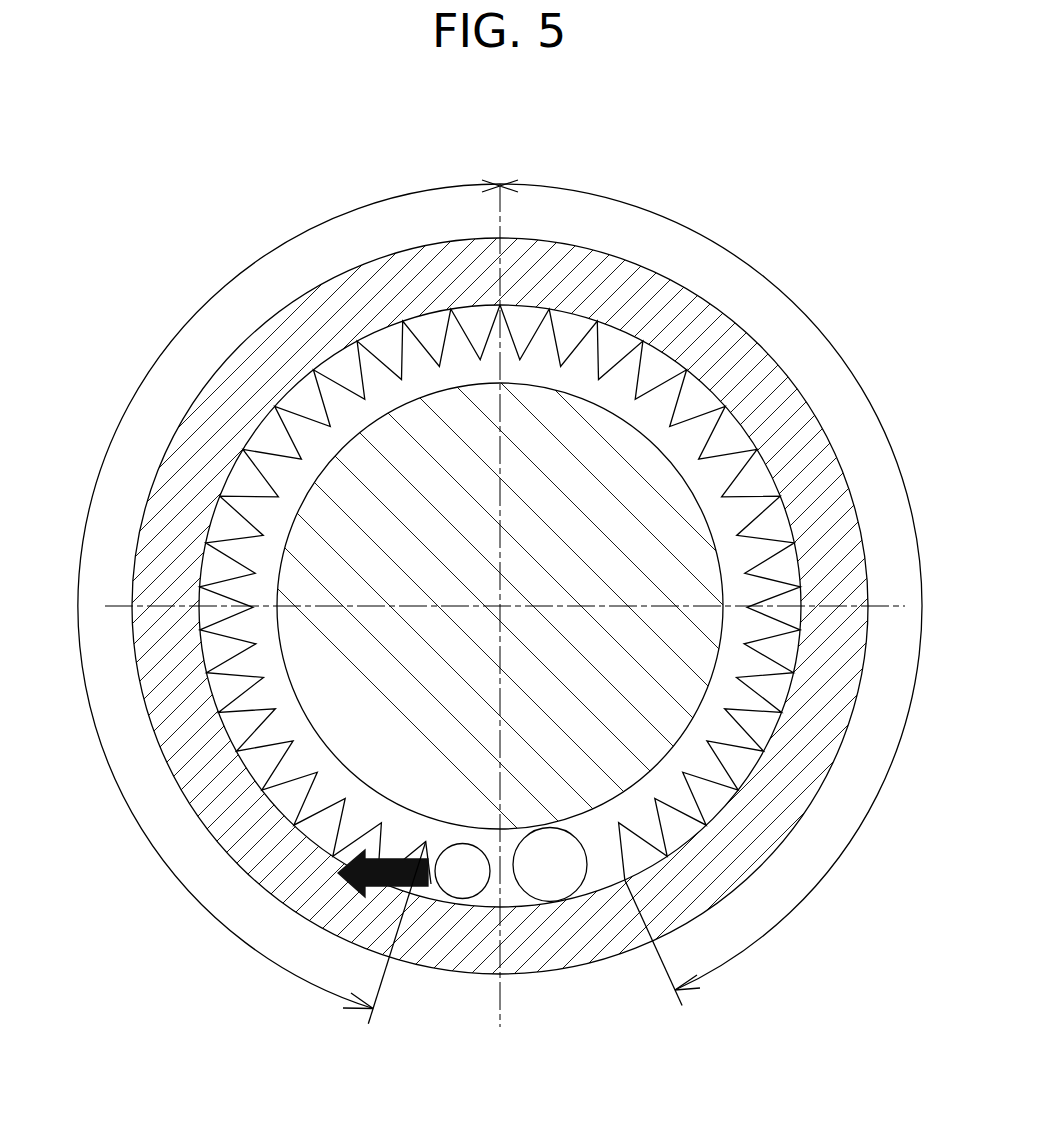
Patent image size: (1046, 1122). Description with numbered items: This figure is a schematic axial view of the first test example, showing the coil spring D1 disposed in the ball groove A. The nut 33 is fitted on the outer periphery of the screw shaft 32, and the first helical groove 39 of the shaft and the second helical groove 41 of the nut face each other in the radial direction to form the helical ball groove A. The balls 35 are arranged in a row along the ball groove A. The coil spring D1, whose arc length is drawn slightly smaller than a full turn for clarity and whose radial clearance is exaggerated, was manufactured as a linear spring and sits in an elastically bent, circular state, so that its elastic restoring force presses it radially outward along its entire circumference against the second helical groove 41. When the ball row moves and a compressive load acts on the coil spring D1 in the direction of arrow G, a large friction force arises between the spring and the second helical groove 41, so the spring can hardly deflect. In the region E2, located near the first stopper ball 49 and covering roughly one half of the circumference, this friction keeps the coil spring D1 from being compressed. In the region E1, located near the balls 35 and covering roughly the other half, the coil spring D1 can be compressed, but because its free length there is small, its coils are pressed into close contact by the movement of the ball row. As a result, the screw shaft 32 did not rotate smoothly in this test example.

The nut 33 is at (368, 282).
The second helical groove 41 is at (304, 420).
The first helical groove 39 is at (760, 497).
The screw shaft 32 is at (674, 701).
The balls 35 is at (462, 887).
The first stopper ball 49 is at (548, 883).
The arrow G is at (368, 873).
The ball groove A is at (574, 372).
The region E1 is at (280, 602).
The region E2 is at (732, 595).
The coil spring D1 is at (298, 802).